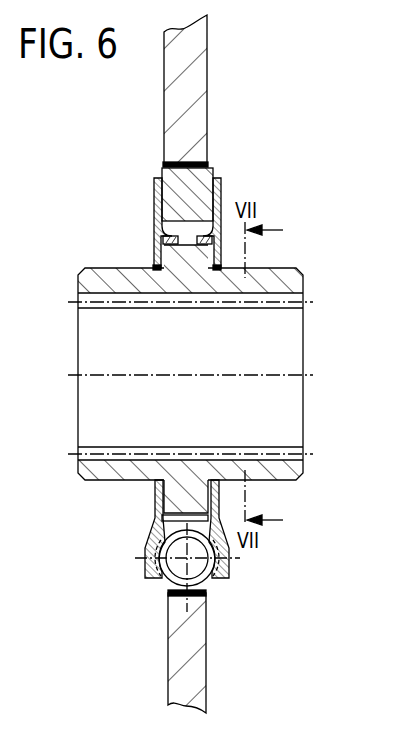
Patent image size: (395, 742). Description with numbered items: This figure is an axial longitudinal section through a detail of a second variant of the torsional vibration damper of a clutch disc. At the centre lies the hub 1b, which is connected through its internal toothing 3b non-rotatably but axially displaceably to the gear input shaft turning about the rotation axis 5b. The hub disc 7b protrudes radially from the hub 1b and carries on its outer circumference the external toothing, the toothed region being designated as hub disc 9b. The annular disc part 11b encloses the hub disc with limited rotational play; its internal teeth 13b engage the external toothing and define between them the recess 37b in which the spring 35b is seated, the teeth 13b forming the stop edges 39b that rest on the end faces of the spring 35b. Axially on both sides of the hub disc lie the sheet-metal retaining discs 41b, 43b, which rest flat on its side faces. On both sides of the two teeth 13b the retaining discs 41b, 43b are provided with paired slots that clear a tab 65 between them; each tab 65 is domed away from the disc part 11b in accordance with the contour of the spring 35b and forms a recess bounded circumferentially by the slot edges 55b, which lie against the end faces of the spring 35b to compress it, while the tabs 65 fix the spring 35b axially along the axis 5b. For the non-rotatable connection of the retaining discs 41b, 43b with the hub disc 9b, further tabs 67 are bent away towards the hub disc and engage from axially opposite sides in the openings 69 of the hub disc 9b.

The hub 1b is at (90, 283).
The internal toothing 3b is at (287, 305).
The rotation axis 5b is at (309, 373).
The hub disc 7b is at (180, 492).
The hub disc teeth 9b is at (175, 177).
The disc part 11b is at (198, 44).
The teeth 13b is at (171, 523).
The spring 35b is at (207, 594).
The recess 37b is at (168, 594).
The stop edges 39b is at (180, 572).
The retaining disc 41b is at (219, 190).
The retaining disc 43b is at (155, 197).
The slot edges 55b is at (157, 573).
The tabs 65 is at (150, 553).
The tabs 67 is at (212, 246).
The openings 69 is at (229, 240).